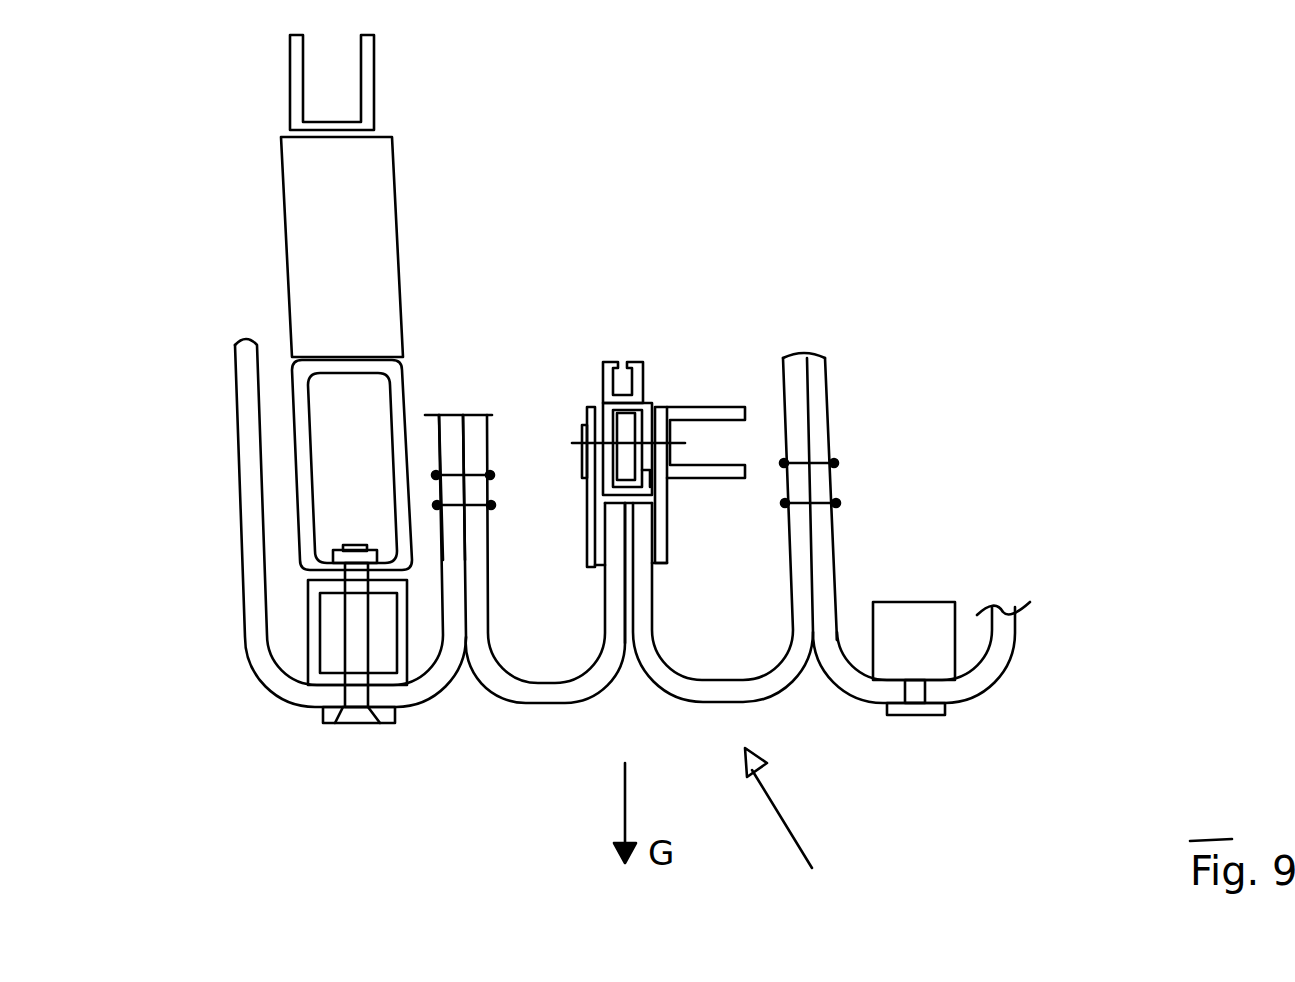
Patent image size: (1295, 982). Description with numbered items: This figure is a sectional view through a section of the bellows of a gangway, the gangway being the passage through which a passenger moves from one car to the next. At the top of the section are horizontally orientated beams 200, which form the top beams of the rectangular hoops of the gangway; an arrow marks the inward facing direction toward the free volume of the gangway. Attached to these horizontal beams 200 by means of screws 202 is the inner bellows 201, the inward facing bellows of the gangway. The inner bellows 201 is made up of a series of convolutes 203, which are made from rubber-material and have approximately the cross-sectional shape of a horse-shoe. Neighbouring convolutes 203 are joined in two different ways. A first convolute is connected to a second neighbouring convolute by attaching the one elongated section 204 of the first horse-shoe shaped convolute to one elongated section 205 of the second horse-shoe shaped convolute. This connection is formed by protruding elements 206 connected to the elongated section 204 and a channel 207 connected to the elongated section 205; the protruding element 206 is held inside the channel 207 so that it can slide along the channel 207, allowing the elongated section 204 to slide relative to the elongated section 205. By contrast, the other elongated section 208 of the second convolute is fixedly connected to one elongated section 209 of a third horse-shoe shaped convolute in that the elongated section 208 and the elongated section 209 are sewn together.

The horizontally orientated beam 200 is at (317, 683).
The inner bellows 201 is at (809, 813).
The screw 202 is at (363, 715).
The convolute 203 is at (432, 687).
The one elongated section of the first horse-shoe shaped convolute 204 is at (647, 598).
The one elongated section of the second horse-shoe shaped convolute 205 is at (617, 602).
The protruding element 206 is at (640, 437).
The channel 207 is at (605, 402).
The other elongated section of the second horse-shoe shaped convolute 208 is at (472, 440).
The one elongated section of the third horse-shoe shaped convolute 209 is at (445, 443).